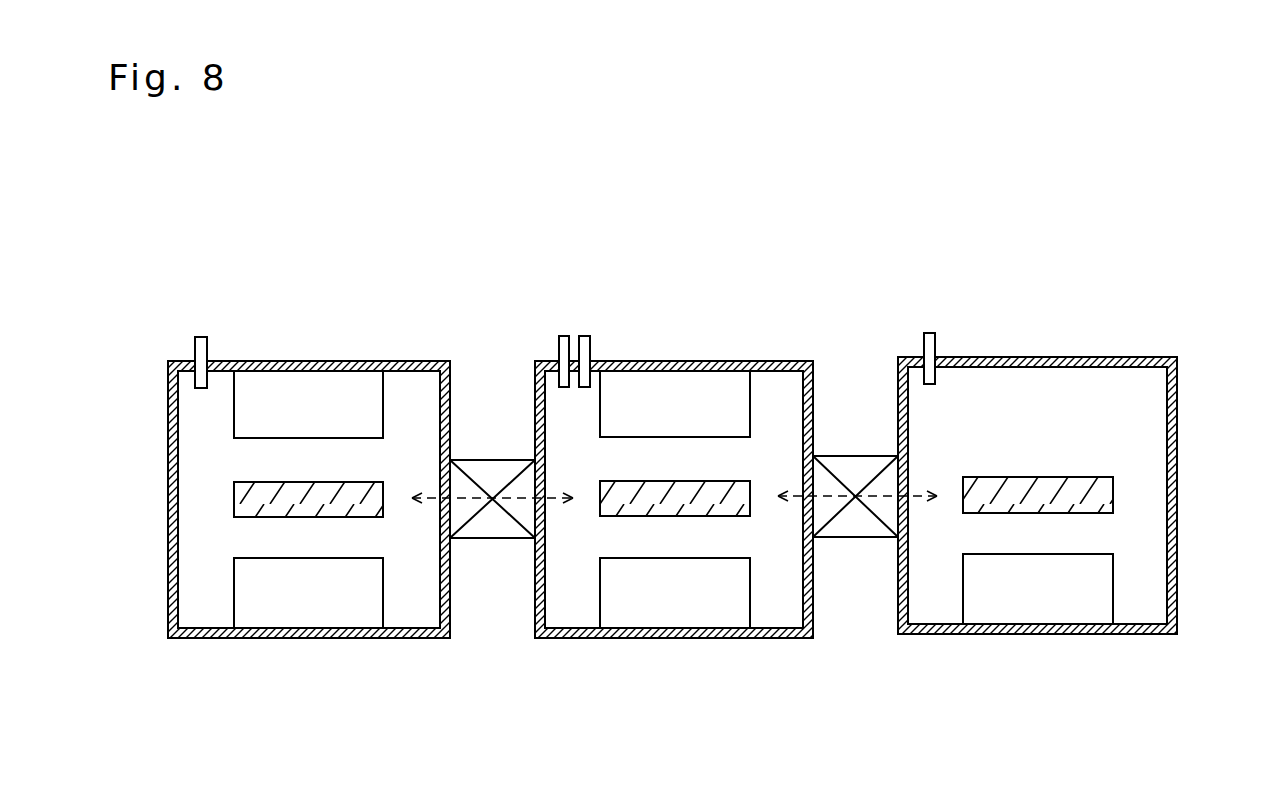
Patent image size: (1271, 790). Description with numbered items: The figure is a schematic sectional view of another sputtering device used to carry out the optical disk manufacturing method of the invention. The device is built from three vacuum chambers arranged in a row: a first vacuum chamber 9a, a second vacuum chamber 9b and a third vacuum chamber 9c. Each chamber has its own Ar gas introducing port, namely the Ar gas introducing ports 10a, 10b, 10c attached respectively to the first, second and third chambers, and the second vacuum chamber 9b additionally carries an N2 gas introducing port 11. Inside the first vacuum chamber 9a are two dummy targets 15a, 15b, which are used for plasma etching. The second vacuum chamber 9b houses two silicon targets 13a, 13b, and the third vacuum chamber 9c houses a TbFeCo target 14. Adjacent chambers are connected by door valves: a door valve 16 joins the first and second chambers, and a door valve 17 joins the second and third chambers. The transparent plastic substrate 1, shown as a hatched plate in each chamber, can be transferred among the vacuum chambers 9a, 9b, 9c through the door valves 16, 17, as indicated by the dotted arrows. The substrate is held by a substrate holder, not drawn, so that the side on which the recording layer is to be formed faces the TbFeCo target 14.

The transparent plastic substrate 1 is at (1113, 498).
The first vacuum chamber 9a is at (434, 361).
The second vacuum chamber 9b is at (798, 361).
The third vacuum chamber 9c is at (1163, 357).
The Ar gas introducing port 10a is at (201, 338).
The Ar gas introducing port 10b is at (565, 336).
The Ar gas introducing port 10c is at (930, 333).
The N2 gas introducing port 11 is at (586, 335).
The silicon target 13a is at (685, 382).
The silicon target 13b is at (705, 611).
The TbFeCo target 14 is at (1067, 606).
The dummy target 15a is at (322, 382).
The dummy target 15b is at (340, 611).
The door valve 16 is at (490, 528).
The door valve 17 is at (860, 530).